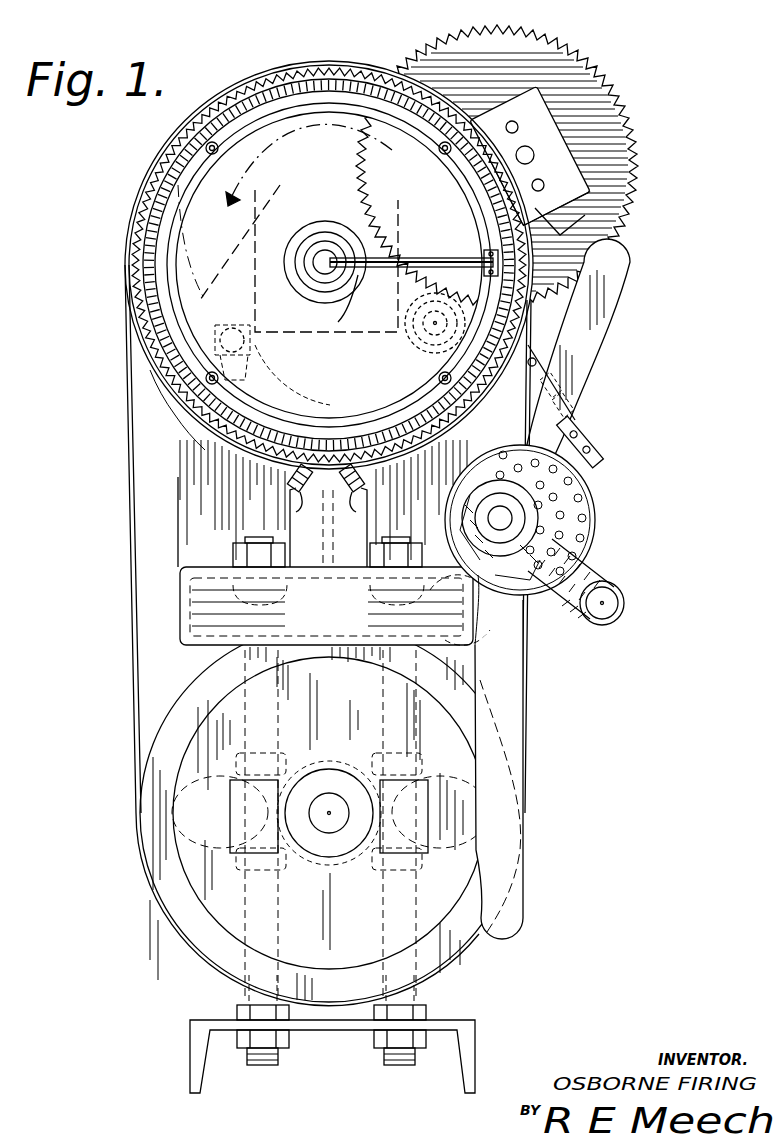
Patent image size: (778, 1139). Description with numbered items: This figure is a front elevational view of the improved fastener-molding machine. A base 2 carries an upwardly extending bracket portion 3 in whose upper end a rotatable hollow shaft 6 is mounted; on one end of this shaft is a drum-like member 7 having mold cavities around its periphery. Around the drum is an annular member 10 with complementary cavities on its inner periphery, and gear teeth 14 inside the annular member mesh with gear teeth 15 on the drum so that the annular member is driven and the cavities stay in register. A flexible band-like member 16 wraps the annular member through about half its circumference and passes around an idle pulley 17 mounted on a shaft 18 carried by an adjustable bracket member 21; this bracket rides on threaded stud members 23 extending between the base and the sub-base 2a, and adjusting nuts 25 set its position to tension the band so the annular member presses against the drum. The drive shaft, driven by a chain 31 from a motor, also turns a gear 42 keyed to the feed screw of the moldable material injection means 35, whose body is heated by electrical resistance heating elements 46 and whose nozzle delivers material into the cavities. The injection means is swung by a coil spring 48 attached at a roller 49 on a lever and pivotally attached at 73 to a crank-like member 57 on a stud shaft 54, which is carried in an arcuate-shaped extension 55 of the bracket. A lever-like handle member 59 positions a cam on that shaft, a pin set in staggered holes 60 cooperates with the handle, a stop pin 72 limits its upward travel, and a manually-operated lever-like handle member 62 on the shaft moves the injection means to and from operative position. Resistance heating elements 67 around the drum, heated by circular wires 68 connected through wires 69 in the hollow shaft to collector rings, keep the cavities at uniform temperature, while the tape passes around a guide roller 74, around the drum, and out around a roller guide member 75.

The base 2 is at (182, 618).
The sub-base 2a is at (480, 1042).
The bracket portion 3 is at (185, 493).
The rotatable hollow shaft 6 is at (324, 260).
The drum-like member 7 is at (178, 223).
The annular member 10 is at (128, 312).
The gear teeth 14 is at (182, 432).
The gear teeth 15 is at (170, 395).
The flexible band-like member 16 is at (126, 548).
The idle pulley 17 is at (170, 660).
The shaft 18 is at (331, 802).
The adjustable bracket member 21 is at (370, 860).
The threaded stud members 23 is at (392, 1060).
The adjusting nut 25 is at (215, 812).
The chain 31 is at (590, 440).
The moldable material injection means 35 is at (545, 138).
The gear 42 is at (625, 170).
The electrical resistance heating elements 46 is at (512, 121).
The coil spring 48 is at (572, 600).
The roller 49 is at (452, 600).
The stud shaft 54 is at (500, 514).
The arcuate-shaped extension 55 is at (598, 530).
The crank-like member 57 is at (596, 575).
The lever-like handle member 59 is at (610, 287).
The holes 60 is at (585, 525).
The manually-operated lever-like handle member 62 is at (505, 697).
The resistance heating elements 67 is at (312, 88).
The circular wires 68 is at (251, 103).
The wires 69 is at (366, 298).
The stop pin 72 is at (492, 458).
The pivotal attachment 73 is at (625, 608).
The guide roller 74 is at (353, 515).
The roller guide member 75 is at (302, 515).